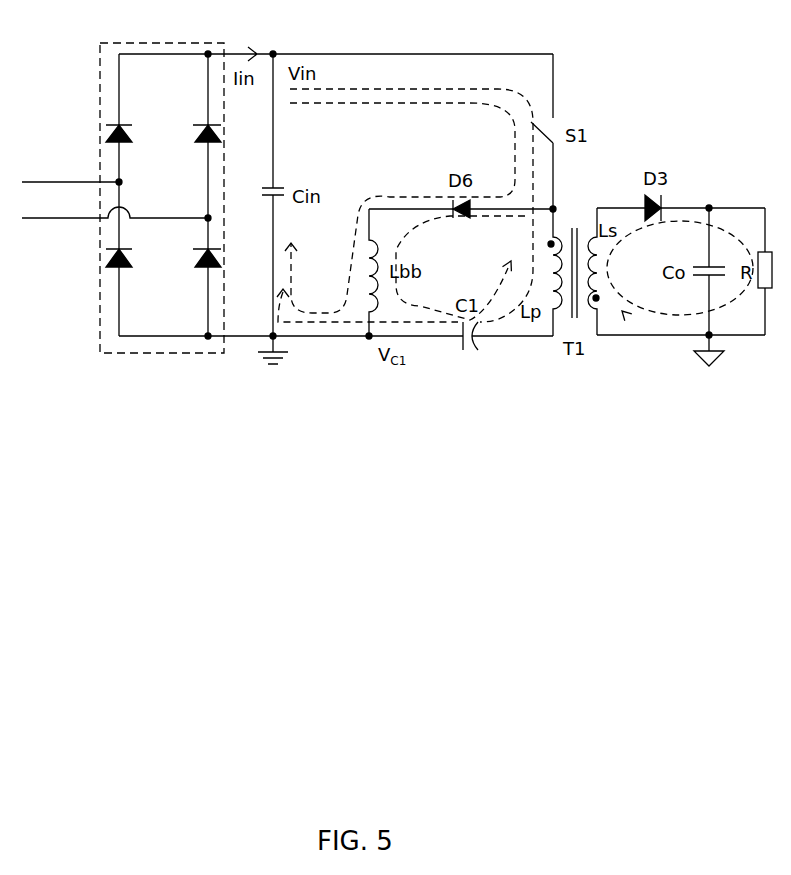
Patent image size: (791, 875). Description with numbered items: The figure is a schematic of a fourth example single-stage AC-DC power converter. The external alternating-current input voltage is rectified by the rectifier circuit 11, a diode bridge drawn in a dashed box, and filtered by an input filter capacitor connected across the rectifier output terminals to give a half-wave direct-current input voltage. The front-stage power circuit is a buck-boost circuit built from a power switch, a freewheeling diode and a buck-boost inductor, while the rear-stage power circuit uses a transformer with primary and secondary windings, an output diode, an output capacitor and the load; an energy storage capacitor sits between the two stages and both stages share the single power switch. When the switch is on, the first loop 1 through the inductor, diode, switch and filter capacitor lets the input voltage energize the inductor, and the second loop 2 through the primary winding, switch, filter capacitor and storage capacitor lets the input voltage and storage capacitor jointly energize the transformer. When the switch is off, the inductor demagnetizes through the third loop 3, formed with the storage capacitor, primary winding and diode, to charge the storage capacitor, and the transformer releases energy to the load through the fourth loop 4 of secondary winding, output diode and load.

The rectifier circuit 11 is at (226, 91).
The first loop 1 is at (408, 205).
The second loop 2 is at (367, 305).
The third loop 3 is at (460, 268).
The fourth loop 4 is at (680, 271).